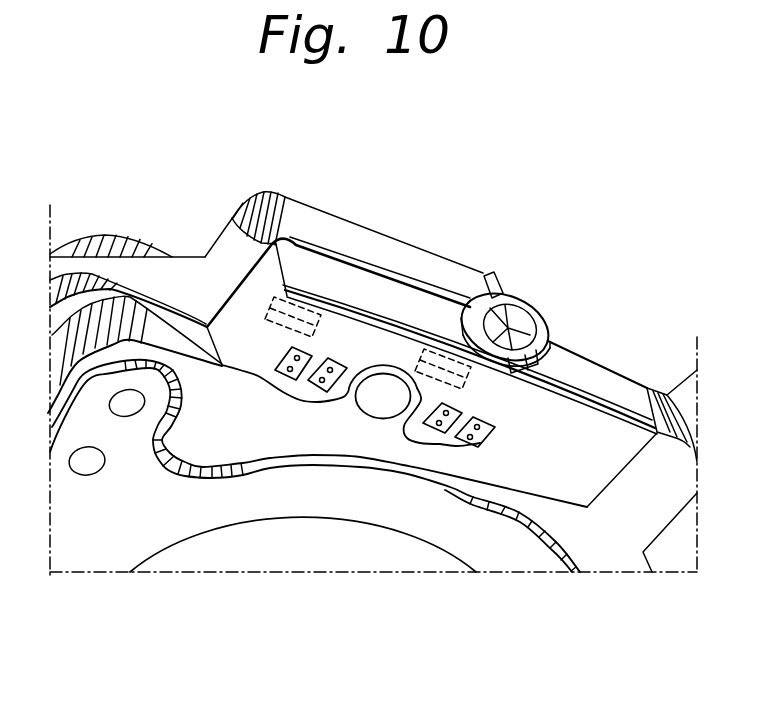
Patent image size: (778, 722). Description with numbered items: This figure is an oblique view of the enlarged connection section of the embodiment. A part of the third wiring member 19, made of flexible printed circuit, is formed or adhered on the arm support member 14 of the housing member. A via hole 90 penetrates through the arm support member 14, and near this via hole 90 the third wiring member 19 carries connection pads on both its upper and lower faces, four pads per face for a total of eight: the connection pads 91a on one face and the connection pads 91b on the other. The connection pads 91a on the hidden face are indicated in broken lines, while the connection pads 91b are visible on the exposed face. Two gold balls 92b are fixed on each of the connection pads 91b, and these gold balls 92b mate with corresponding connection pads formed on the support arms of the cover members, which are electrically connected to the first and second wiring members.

The arm support member 14 is at (270, 500).
The third wiring member 19 is at (592, 423).
The via hole 90 is at (383, 395).
The connection pads 91a is at (304, 292).
The connection pads 91b is at (285, 378).
The gold balls 92b is at (480, 439).